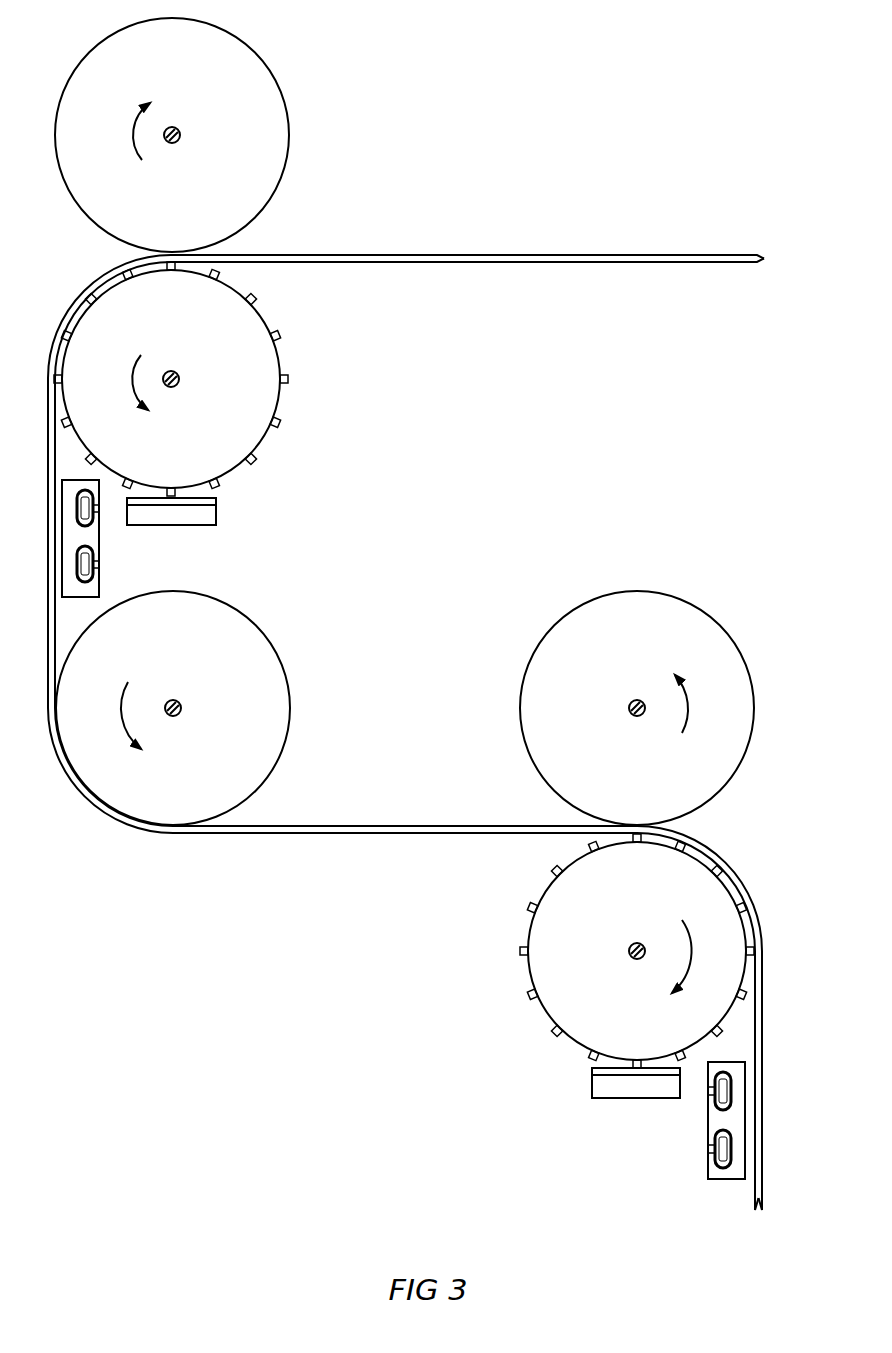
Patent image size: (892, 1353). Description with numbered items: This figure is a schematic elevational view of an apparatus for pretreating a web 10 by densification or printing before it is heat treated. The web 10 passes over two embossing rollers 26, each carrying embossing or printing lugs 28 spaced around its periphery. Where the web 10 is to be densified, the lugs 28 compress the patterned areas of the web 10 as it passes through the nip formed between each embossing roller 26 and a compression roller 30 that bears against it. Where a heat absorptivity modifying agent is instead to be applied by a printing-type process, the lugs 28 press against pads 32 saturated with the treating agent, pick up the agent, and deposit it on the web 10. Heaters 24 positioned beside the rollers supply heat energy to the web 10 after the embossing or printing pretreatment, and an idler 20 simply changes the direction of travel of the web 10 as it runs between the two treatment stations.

The web 10 is at (565, 255).
The idler 20 is at (290, 708).
The heaters 24 is at (100, 580).
The embossing rollers 26 is at (258, 310).
The lugs 28 is at (289, 380).
The compression rollers 30 is at (290, 150).
The pads 32 is at (216, 522).